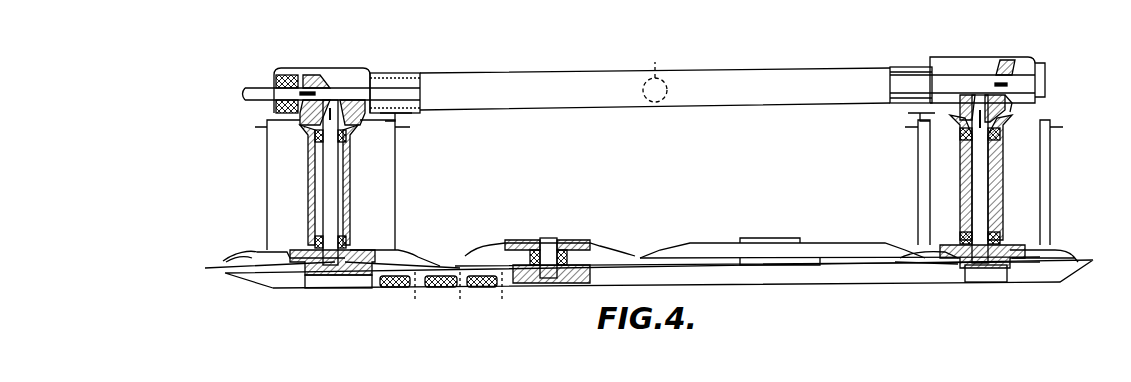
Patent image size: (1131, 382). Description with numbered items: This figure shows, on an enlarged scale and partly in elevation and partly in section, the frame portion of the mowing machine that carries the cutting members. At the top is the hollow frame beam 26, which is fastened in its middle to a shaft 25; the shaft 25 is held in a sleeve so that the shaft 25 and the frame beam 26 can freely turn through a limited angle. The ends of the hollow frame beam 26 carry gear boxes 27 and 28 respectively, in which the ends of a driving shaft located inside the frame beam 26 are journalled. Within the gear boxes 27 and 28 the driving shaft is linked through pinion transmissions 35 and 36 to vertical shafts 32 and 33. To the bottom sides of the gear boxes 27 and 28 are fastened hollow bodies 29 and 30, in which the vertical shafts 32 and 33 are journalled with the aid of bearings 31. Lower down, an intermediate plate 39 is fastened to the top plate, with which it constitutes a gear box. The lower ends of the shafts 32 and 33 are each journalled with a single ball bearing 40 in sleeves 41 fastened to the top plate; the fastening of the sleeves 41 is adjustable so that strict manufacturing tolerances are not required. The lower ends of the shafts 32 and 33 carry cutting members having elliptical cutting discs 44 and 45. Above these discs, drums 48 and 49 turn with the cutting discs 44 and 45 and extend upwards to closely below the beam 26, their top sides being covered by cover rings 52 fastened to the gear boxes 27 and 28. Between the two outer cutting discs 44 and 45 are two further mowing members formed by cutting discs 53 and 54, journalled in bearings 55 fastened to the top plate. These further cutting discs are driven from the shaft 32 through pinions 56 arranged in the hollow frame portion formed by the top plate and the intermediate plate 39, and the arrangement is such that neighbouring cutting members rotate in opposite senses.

The shaft 25 is at (652, 78).
The hollow frame beam 26 is at (776, 88).
The gear box 27 is at (336, 67).
The gear box 28 is at (960, 56).
The hollow body 29 is at (310, 172).
The hollow body 30 is at (1003, 180).
The bearings 31 is at (346, 138).
The vertical shaft 32 is at (332, 172).
The vertical shaft 33 is at (984, 197).
The pinion transmission 35 is at (300, 124).
The pinion transmission 36 is at (1012, 108).
The intermediate plate 39 is at (400, 92).
The ball bearing 40 is at (318, 284).
The sleeve 41 is at (310, 268).
The cutting disc 44 is at (238, 256).
The cutting disc 45 is at (1058, 250).
The drum 48 is at (267, 230).
The drum 49 is at (1040, 190).
The cover rings 52 is at (402, 116).
The cutting disc 53 is at (603, 246).
The cutting disc 54 is at (745, 242).
The bearings 55 is at (580, 250).
The pinions 56 is at (405, 290).